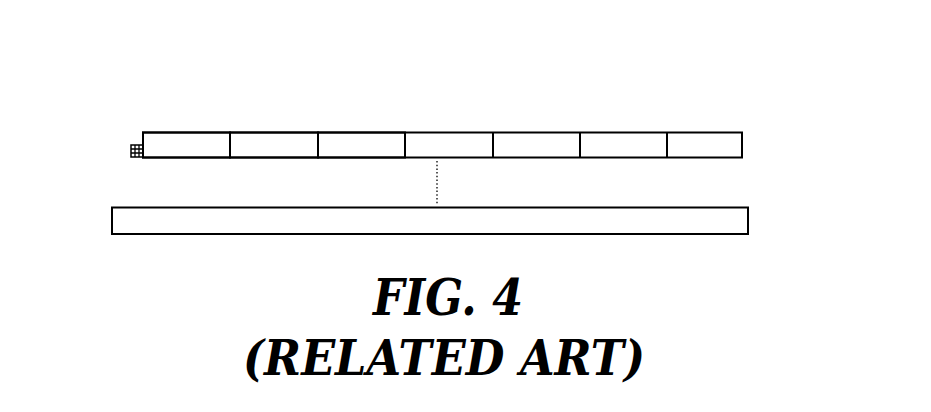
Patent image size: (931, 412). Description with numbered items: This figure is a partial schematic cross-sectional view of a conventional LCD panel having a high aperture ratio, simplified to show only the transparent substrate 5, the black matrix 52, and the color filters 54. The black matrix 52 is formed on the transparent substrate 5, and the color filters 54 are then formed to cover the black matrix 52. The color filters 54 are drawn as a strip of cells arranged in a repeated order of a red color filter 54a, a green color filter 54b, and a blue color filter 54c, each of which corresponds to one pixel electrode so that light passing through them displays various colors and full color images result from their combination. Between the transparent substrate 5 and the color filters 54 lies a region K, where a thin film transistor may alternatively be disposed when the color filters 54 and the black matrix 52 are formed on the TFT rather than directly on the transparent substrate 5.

The transparent substrate 5 is at (430, 223).
The black matrix 52 is at (133, 145).
The color filters 54 is at (442, 89).
The red color filter 54a is at (186, 133).
The green color filter 54b is at (276, 133).
The blue color filter 54c is at (364, 119).
The region K is at (755, 160).